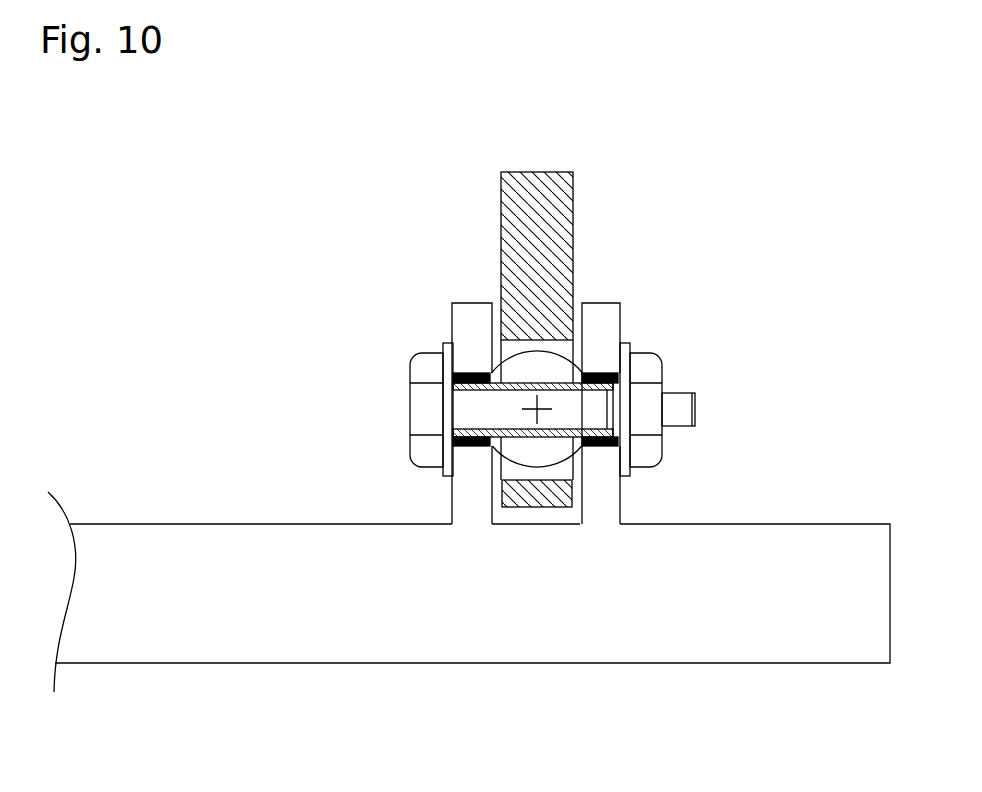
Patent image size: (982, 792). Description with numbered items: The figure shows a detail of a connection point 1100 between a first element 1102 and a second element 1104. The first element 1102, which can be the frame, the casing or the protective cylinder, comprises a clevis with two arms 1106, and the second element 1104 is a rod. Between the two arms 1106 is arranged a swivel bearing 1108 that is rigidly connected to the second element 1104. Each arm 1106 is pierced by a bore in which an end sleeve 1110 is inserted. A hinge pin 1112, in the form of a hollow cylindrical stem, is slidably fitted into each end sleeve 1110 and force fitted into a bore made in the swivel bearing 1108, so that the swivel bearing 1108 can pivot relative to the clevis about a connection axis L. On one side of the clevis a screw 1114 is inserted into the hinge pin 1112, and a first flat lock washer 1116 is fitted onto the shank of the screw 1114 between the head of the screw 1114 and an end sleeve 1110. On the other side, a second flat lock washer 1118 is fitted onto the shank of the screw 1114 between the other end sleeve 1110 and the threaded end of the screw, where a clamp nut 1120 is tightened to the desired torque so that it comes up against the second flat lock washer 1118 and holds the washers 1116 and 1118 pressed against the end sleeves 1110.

The connection point 1100 is at (736, 270).
The first element 1102 is at (207, 612).
The second element 1104 is at (562, 182).
The arms 1106 is at (603, 315).
The swivel bearing 1108 is at (528, 367).
The end sleeve 1110 is at (468, 443).
The hinge pin 1112 is at (558, 437).
The screw 1114 is at (417, 368).
The first flat lock washer 1116 is at (448, 342).
The second flat lock washer 1118 is at (626, 346).
The clamp nut 1120 is at (650, 368).
The connection axis L is at (537, 409).